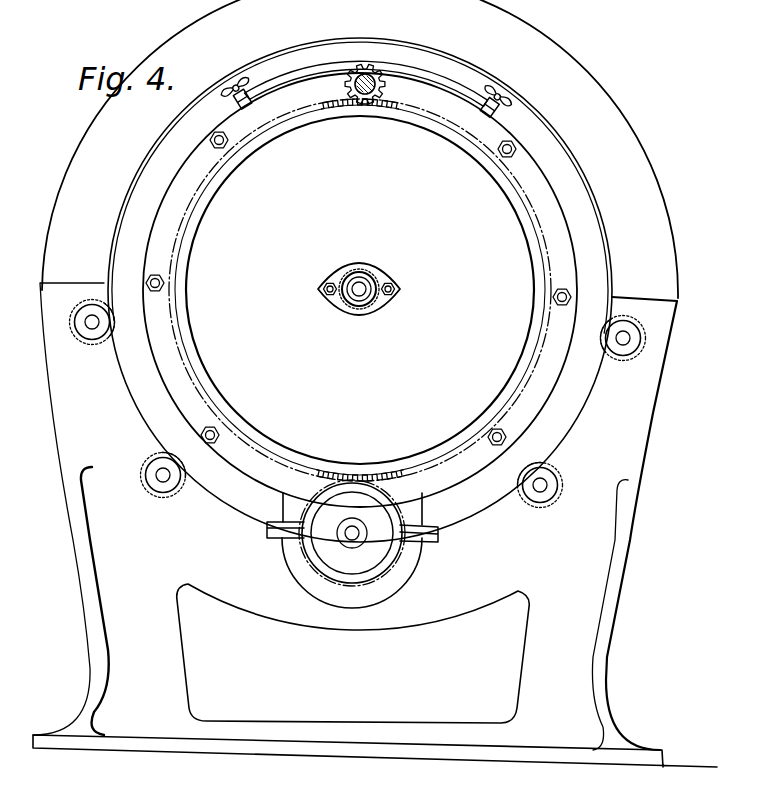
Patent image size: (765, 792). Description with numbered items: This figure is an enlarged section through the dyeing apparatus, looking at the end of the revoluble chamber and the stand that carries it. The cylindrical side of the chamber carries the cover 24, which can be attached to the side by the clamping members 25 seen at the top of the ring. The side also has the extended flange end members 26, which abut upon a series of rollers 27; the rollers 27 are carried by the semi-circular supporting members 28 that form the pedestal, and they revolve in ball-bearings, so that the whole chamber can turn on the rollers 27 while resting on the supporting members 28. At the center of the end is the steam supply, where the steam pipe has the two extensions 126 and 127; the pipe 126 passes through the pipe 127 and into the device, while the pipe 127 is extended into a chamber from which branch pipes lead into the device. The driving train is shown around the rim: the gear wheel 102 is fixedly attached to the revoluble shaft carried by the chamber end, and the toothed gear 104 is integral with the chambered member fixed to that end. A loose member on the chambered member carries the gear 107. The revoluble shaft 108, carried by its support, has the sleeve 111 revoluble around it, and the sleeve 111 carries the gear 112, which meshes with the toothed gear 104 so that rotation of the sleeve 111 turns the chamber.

The cover 24 is at (453, 80).
The clamping members 25 is at (243, 86).
The extended flange end members 26 is at (591, 201).
The rollers 27 is at (150, 452).
The semi-circular supporting members 28 is at (375, 383).
The gear wheel 102 is at (303, 548).
The toothed gear 104 is at (397, 104).
The gear 107 is at (397, 480).
The revoluble shaft 108 is at (371, 104).
The sleeve 111 is at (368, 78).
The gear 112 is at (363, 64).
The steam pipe extension 126 is at (358, 300).
The steam pipe extension 127 is at (377, 275).